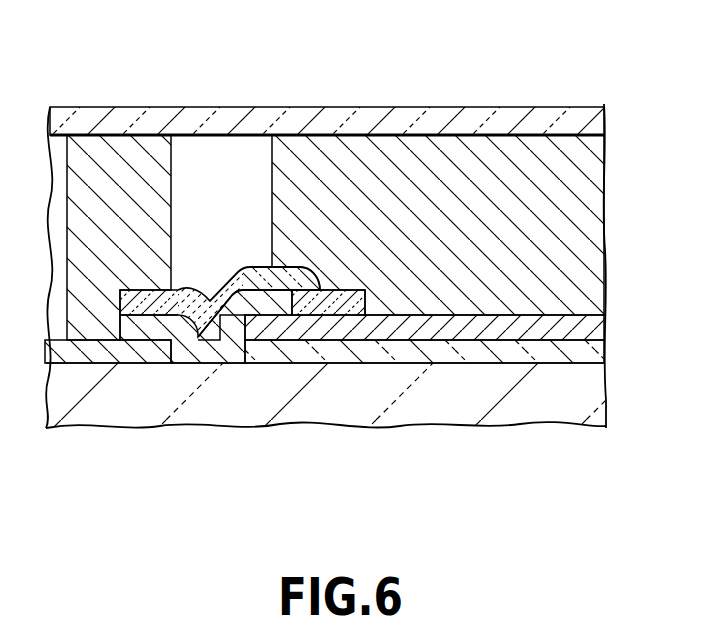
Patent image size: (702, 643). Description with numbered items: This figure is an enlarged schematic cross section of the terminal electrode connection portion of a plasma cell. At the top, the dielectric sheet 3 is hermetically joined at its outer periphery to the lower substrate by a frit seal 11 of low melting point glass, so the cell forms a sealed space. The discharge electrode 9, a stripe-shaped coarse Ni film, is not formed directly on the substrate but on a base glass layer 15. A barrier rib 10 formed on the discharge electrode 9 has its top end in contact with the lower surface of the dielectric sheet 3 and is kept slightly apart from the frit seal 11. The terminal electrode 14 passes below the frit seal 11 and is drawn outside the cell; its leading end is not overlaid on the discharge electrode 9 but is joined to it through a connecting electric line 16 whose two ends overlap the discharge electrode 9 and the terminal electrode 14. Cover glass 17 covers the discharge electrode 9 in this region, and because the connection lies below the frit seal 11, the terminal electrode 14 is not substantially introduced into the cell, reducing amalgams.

The dielectric sheet 3 is at (292, 122).
The discharge electrode 9 is at (522, 328).
The barrier rib 10 is at (478, 150).
The frit seal 11 is at (128, 127).
The terminal electrode 14 is at (103, 350).
The base glass layer 15 is at (423, 353).
The connecting electric line 16 is at (228, 353).
The cover glass 17 is at (317, 305).